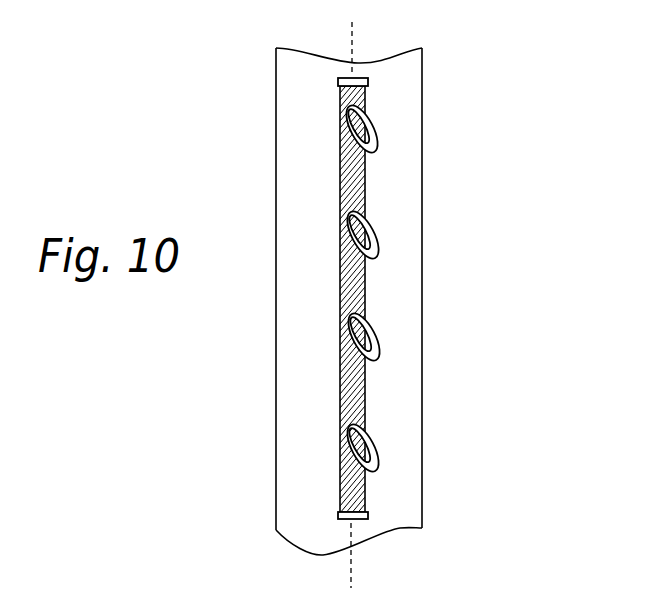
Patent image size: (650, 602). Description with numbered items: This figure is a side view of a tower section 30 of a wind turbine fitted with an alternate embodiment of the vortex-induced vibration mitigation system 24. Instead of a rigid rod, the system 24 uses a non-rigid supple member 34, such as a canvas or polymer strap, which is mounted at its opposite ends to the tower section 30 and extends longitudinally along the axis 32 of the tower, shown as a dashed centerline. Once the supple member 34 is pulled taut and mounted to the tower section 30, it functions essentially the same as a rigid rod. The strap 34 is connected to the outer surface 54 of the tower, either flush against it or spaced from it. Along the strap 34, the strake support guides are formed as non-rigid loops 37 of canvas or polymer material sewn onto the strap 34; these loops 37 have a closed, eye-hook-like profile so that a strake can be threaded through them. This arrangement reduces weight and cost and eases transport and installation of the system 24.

The vortex-induced vibration (VIV) mitigation system 24 is at (508, 165).
The tower section 30 is at (292, 415).
The longitudinal axis 32 is at (352, 52).
The non-rigid supple member 34 is at (367, 295).
The non-rigid loops 37 is at (372, 217).
The outer surface 54 is at (285, 282).